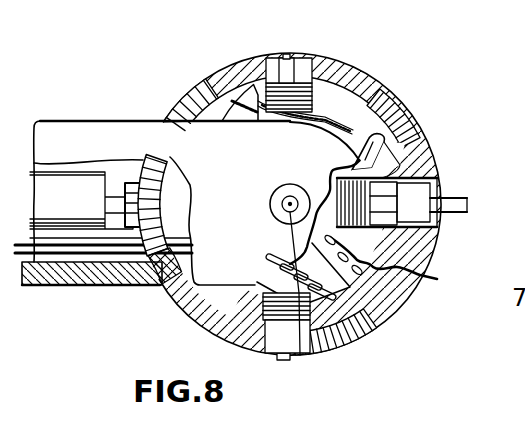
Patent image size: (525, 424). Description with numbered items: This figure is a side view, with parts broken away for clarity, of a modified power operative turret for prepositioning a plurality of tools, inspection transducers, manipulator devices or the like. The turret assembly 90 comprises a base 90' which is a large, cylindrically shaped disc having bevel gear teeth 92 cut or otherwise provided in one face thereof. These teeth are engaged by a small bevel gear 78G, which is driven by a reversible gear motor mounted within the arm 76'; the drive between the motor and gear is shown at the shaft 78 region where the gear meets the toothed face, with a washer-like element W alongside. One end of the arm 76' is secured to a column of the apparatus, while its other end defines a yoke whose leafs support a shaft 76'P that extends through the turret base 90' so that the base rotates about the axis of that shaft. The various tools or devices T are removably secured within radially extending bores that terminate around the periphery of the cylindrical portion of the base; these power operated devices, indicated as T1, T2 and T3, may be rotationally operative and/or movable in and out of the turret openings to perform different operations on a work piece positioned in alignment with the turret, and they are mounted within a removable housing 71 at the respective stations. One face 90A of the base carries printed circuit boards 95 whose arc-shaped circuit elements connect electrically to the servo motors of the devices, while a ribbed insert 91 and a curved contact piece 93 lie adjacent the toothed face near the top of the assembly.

The turret assembly 90 is at (300, 188).
The base 90' is at (294, 200).
The face of the turret base 90A is at (382, 319).
The ribbed insert 91 is at (386, 100).
The bevel gear teeth 92 is at (193, 100).
The curved contact piece 93 is at (229, 93).
The printed circuit boards 95 is at (384, 131).
The removable housing 71 is at (373, 207).
The arm 76' is at (191, 174).
The shaft 76'P is at (274, 318).
The shaft 78 is at (43, 245).
The small bevel gear 78G is at (140, 259).
The washer band W is at (163, 265).
The tools or devices T is at (285, 66).
The power operated device T1 is at (275, 70).
The power operated device T2 is at (428, 183).
The power operated device T3 is at (272, 353).